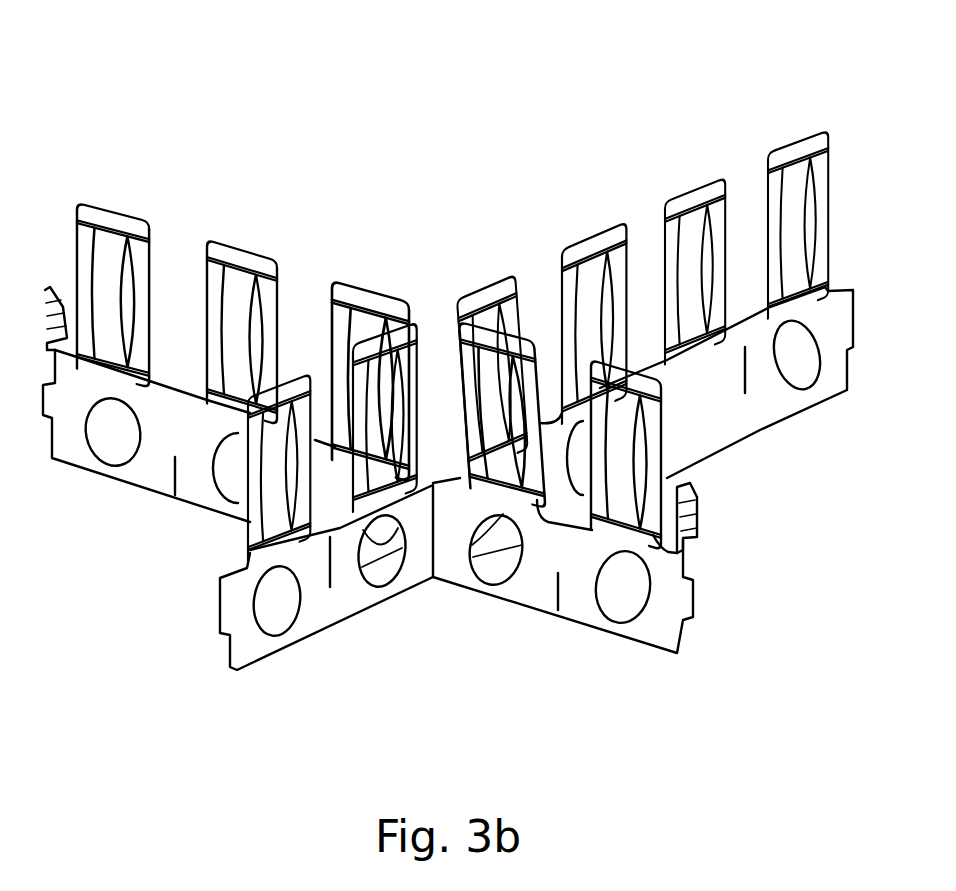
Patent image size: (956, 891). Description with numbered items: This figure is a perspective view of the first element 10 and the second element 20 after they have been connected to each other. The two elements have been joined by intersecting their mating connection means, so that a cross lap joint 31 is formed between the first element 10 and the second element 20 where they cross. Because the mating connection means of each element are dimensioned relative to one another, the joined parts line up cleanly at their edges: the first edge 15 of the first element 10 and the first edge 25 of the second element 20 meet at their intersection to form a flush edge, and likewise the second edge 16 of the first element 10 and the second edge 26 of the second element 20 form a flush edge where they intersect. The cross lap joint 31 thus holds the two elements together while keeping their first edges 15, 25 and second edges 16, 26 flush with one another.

The first element 10 is at (352, 653).
The first edge 15 is at (747, 437).
The second edge 16 is at (744, 345).
The second element 20 is at (248, 213).
The first edge 25 is at (145, 492).
The second edge 26 is at (173, 411).
The cross lap joint 31 is at (432, 520).